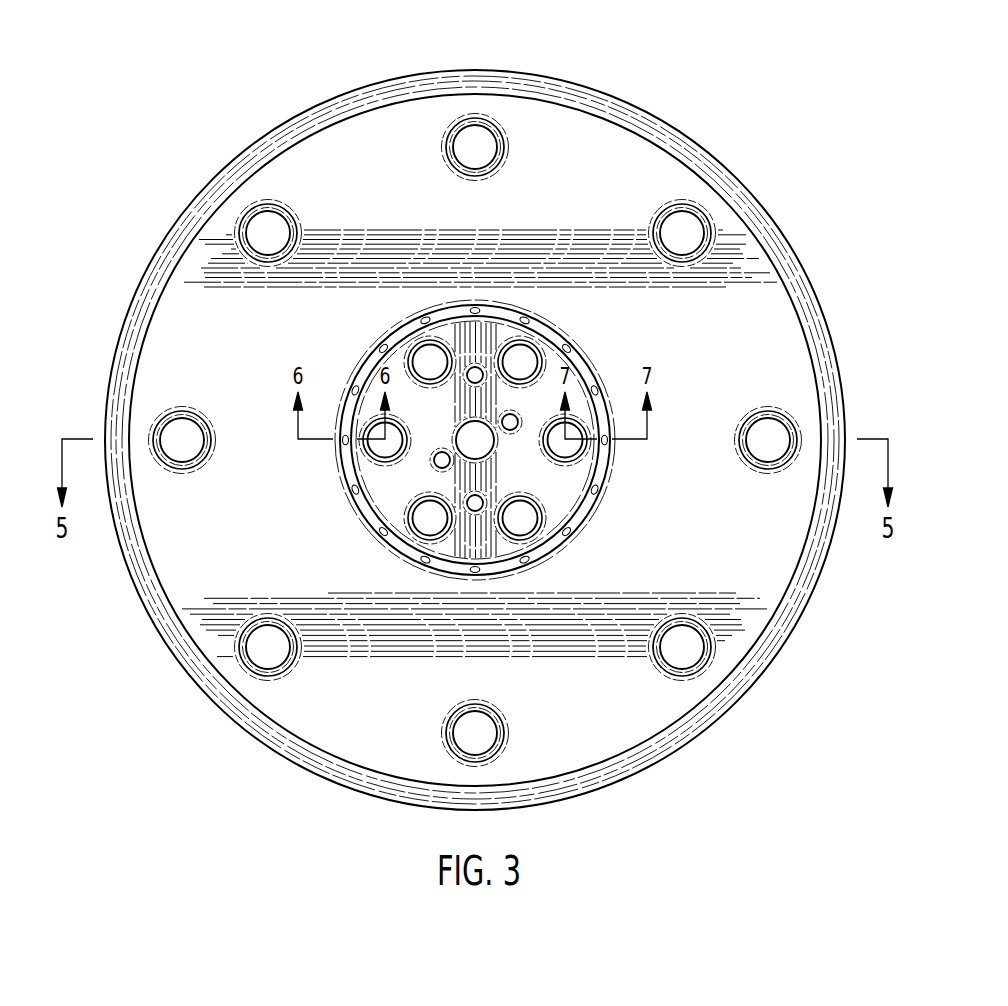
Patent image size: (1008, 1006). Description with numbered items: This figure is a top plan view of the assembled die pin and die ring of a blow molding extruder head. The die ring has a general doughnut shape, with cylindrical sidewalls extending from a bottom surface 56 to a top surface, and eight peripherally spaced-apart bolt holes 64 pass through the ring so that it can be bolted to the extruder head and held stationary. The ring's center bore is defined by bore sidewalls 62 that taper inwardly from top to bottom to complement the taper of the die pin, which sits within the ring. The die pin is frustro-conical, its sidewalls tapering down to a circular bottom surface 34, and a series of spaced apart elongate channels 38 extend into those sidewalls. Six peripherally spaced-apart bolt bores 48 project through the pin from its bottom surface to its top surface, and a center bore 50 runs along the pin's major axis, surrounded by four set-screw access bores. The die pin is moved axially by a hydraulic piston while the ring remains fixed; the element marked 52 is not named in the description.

The circular bottom surface 34 is at (497, 330).
The elongate channels 38 is at (570, 337).
The bolt bores 48 is at (437, 450).
The center bore 50 is at (469, 430).
The outer seal ring 52 is at (393, 327).
The bottom surface 56 is at (747, 315).
The bore sidewalls 62 is at (598, 492).
The bolt holes 64 is at (782, 432).